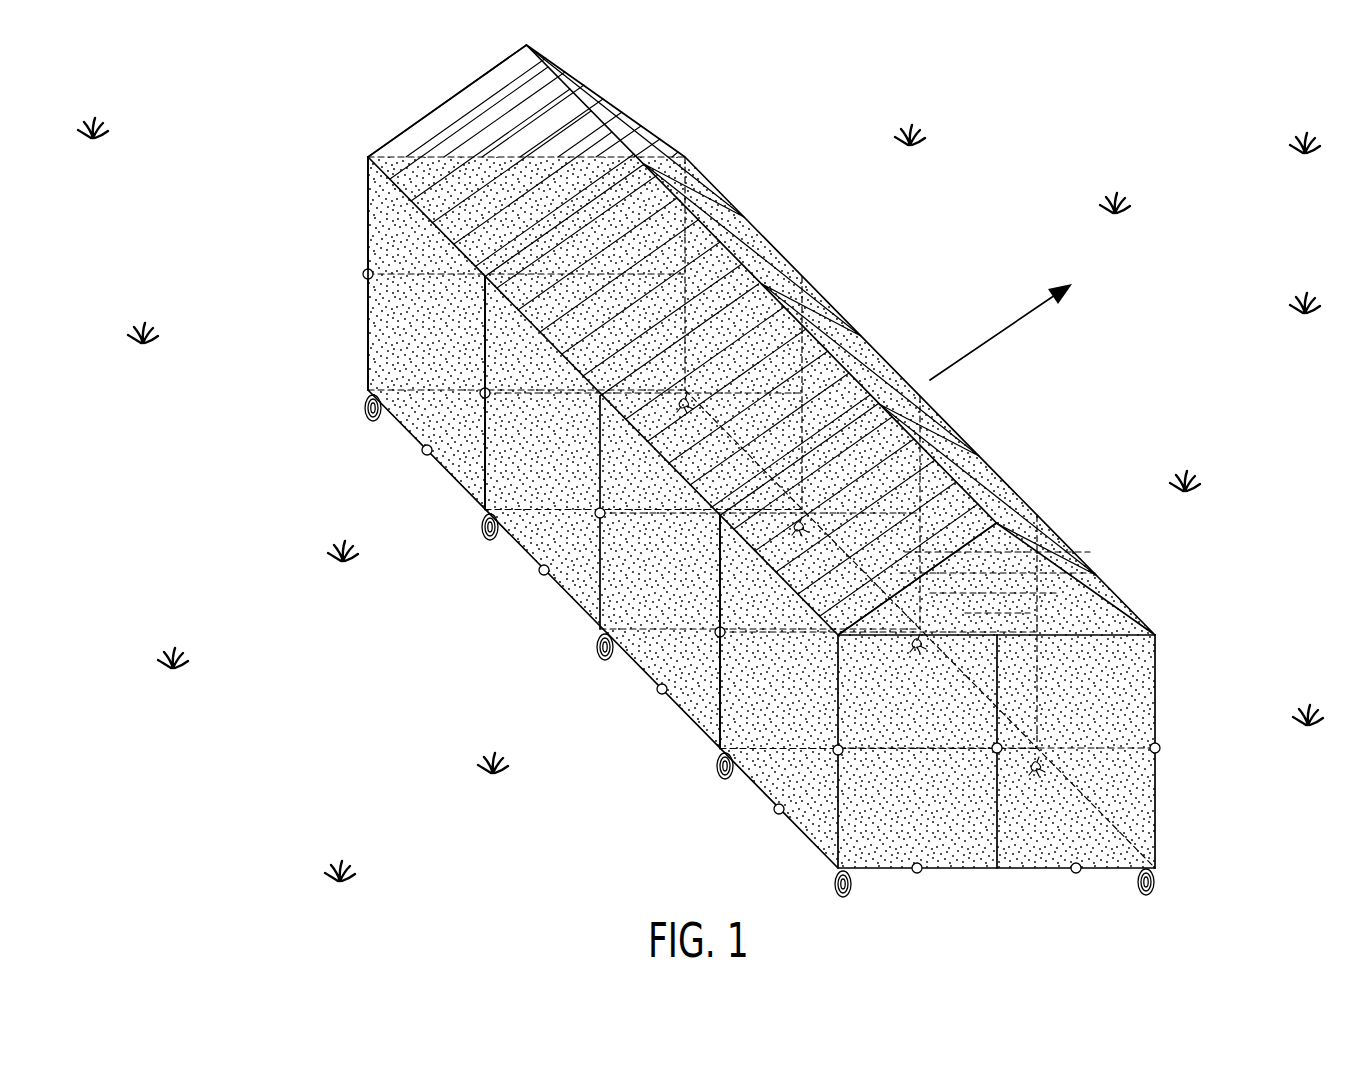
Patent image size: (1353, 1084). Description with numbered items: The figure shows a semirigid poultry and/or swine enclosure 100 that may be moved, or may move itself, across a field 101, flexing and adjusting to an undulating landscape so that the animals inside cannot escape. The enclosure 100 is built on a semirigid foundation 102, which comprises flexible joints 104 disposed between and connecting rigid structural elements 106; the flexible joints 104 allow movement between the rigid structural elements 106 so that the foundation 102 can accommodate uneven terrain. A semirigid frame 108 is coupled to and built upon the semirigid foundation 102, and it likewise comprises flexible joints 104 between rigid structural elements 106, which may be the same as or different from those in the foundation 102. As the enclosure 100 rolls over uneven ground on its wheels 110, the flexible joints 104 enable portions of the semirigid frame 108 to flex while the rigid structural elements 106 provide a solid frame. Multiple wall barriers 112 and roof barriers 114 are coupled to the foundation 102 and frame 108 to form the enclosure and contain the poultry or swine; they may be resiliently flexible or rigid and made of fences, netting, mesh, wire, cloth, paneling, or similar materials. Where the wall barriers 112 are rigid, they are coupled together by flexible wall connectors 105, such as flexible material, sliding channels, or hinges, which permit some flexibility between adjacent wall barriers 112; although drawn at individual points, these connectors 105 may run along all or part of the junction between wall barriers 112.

The semirigid poultry and/or swine enclosure 100 is at (218, 130).
The field 101 is at (1256, 221).
The semirigid foundation 102 is at (395, 388).
The flexible joints 104 is at (460, 155).
The flexible wall connectors 105 is at (413, 157).
The rigid structural elements 106 is at (421, 450).
The semirigid frame 108 is at (485, 305).
The wheels 110 is at (672, 392).
The wall barriers 112 is at (438, 336).
The roof barriers 114 is at (524, 139).